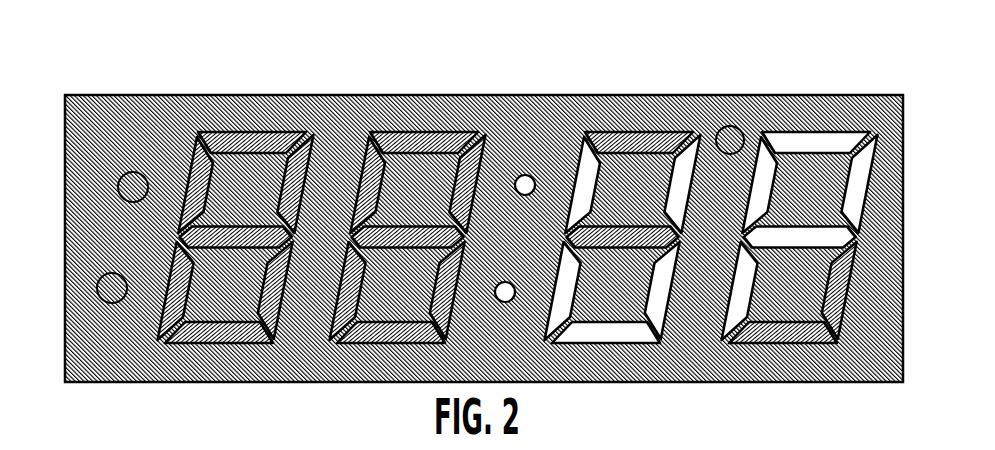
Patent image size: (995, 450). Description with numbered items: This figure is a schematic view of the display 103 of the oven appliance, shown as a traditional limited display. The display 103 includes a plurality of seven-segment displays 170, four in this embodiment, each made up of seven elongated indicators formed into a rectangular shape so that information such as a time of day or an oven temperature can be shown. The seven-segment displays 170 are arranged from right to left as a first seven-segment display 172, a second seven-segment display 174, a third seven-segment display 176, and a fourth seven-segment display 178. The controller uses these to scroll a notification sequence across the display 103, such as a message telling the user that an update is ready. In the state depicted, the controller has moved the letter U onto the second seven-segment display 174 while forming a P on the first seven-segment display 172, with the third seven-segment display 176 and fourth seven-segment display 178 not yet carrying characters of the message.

The display 103 is at (48, 74).
The seven-segment displays 170 is at (522, 185).
The first seven-segment display 172 is at (813, 132).
The second seven-segment display 174 is at (621, 132).
The third seven-segment display 176 is at (438, 132).
The fourth seven-segment display 178 is at (250, 132).